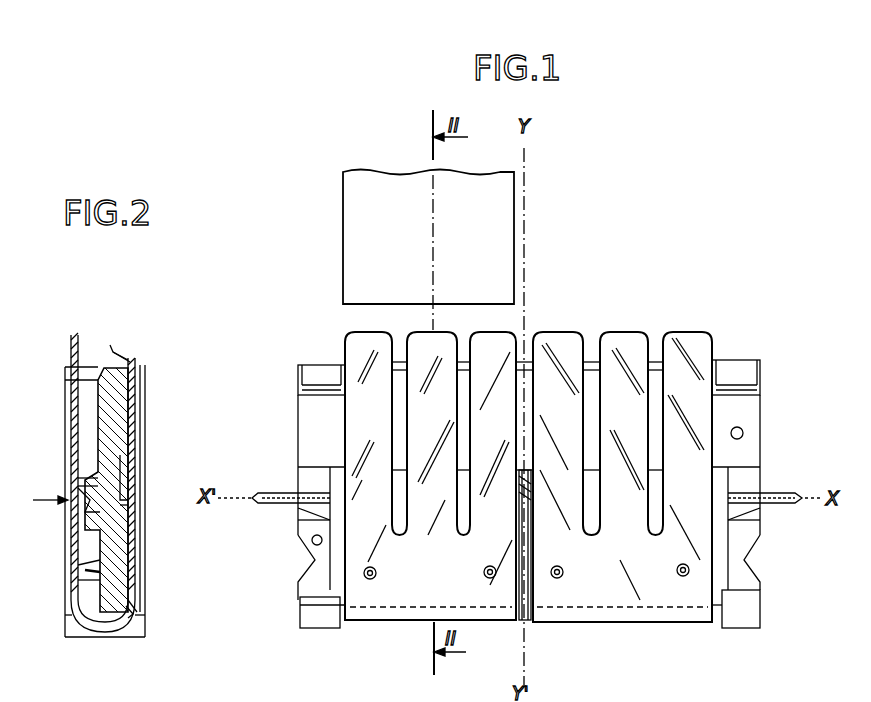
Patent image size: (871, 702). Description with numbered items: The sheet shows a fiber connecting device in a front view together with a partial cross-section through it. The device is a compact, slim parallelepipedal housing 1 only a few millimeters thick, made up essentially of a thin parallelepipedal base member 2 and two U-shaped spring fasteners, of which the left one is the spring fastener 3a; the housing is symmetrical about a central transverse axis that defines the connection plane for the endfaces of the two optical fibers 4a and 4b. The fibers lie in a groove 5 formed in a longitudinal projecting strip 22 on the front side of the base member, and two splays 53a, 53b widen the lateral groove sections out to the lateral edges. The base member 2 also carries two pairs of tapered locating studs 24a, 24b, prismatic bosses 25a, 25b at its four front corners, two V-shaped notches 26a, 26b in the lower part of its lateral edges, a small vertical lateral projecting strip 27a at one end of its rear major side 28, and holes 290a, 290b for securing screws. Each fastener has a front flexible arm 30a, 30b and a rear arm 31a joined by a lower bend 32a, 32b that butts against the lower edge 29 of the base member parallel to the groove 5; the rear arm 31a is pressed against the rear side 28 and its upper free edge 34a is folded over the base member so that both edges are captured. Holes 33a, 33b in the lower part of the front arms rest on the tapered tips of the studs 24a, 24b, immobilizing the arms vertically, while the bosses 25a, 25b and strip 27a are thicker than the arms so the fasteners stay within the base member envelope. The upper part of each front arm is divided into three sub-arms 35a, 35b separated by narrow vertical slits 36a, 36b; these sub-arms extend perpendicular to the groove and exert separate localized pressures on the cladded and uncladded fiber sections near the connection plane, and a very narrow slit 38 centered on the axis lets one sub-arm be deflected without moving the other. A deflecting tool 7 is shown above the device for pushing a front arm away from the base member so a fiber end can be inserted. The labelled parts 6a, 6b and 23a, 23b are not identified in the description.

In FIG. 1, the housing 1 is at (700, 280).
In FIG. 1, the base member 2 is at (298, 410).
In FIG. 2, the base member 2 is at (115, 440).
In FIG. 2, the spring fastener 3a is at (136, 622).
In FIG. 1, the optical fiber 4a is at (262, 494).
In FIG. 2, the optical fiber 4a is at (84, 500).
In FIG. 1, the optical fiber 4b is at (800, 495).
In FIG. 1, the groove 5 is at (526, 468).
In FIG. 2, the groove 5 is at (138, 502).
In FIG. 1, the channel 6a is at (337, 578).
In FIG. 1, the channel 6b is at (735, 578).
In FIG. 1, the deflecting tool 7 is at (368, 185).
In FIG. 1, the longitudinal projecting strip 22 is at (312, 478).
In FIG. 2, the longitudinal projecting strip 22 is at (80, 482).
In FIG. 1, the left side plate 23a is at (312, 424).
In FIG. 2, the left side plate 23a is at (95, 424).
In FIG. 1, the right side plate 23b is at (736, 447).
In FIG. 1, the tapered locating studs 24a is at (375, 578).
In FIG. 2, the tapered locating studs 24a is at (80, 580).
In FIG. 1, the tapered locating studs 24b is at (562, 566).
In FIG. 1, the prismatic bosses 25a is at (320, 378).
In FIG. 2, the prismatic bosses 25a is at (86, 378).
In FIG. 1, the prismatic bosses 25b is at (738, 370).
In FIG. 1, the V-shaped notch 26a is at (300, 580).
In FIG. 1, the V-shaped notch 26b is at (758, 562).
In FIG. 2, the lateral projecting strip 27a is at (141, 580).
In FIG. 2, the rear major side 28 is at (141, 398).
In FIG. 2, the longitudinal lower edge 29 is at (136, 612).
In FIG. 1, the hole 290a is at (312, 543).
In FIG. 1, the hole 290b is at (744, 434).
In FIG. 1, the front flexible arm 30a is at (430, 552).
In FIG. 2, the front flexible arm 30a is at (68, 443).
In FIG. 1, the front flexible arm 30b is at (604, 596).
In FIG. 2, the rear arm 31a is at (142, 492).
In FIG. 1, the lower bend 32a is at (422, 624).
In FIG. 2, the lower bend 32a is at (106, 632).
In FIG. 1, the lower bend 32b is at (640, 626).
In FIG. 1, the locating holes 33a is at (494, 566).
In FIG. 1, the locating holes 33b is at (680, 568).
In FIG. 2, the upper free edge 34a is at (126, 358).
In FIG. 1, the sub-arms 35a is at (392, 334).
In FIG. 1, the sub-arms 35b is at (588, 336).
In FIG. 1, the vertical slits 36a is at (464, 350).
In FIG. 1, the vertical slits 36b is at (656, 334).
In FIG. 1, the vertical slit 38 is at (528, 336).
In FIG. 1, the splay 53a is at (300, 512).
In FIG. 1, the splay 53b is at (756, 512).